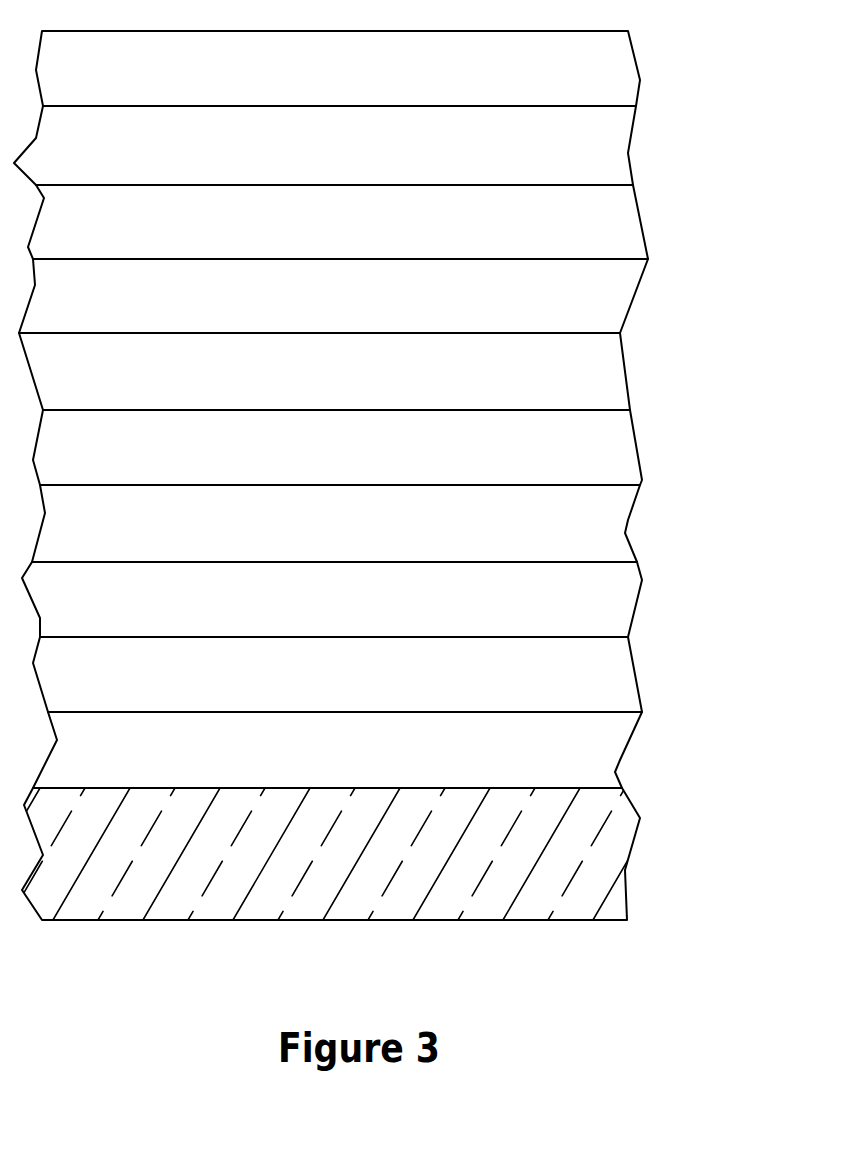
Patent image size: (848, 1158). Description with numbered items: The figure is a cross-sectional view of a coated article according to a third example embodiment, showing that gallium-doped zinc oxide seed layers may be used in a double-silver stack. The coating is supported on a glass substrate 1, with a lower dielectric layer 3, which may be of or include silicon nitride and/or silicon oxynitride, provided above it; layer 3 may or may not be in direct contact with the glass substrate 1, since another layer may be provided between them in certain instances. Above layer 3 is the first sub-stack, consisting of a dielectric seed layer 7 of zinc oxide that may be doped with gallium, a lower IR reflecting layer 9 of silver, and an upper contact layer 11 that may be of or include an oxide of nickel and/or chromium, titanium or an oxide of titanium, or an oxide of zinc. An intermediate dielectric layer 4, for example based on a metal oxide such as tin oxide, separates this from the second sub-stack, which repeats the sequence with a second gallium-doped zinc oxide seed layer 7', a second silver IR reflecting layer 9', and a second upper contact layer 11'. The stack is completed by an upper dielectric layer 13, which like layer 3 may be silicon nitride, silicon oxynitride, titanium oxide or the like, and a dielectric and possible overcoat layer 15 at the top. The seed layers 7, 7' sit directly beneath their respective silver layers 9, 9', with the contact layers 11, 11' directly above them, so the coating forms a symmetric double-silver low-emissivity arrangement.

The glass substrate 1 is at (600, 857).
The dielectric layer 3 is at (600, 750).
The dielectric seed layer 7 is at (366, 674).
The IR reflecting layer 9 is at (361, 599).
The upper contact layer 11 is at (373, 523).
The intermediate dielectric layer 4 is at (600, 448).
The dielectric seed layer 7' is at (362, 371).
The IR reflecting layer 9' is at (362, 296).
The upper contact layer 11' is at (374, 222).
The dielectric layer 13 is at (600, 147).
The overcoat layer 15 is at (600, 70).